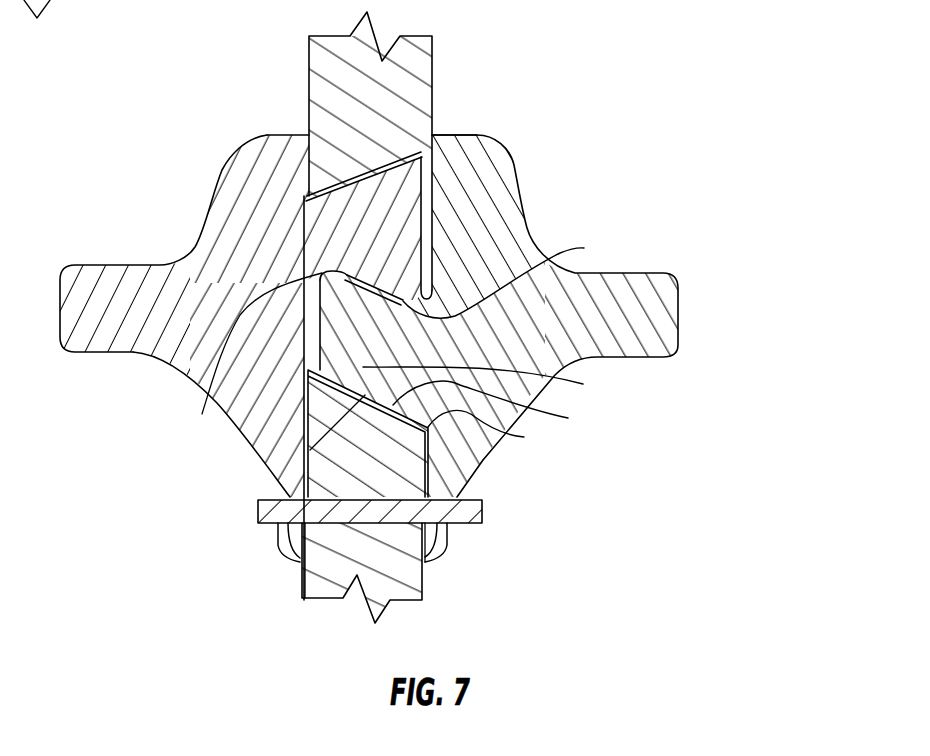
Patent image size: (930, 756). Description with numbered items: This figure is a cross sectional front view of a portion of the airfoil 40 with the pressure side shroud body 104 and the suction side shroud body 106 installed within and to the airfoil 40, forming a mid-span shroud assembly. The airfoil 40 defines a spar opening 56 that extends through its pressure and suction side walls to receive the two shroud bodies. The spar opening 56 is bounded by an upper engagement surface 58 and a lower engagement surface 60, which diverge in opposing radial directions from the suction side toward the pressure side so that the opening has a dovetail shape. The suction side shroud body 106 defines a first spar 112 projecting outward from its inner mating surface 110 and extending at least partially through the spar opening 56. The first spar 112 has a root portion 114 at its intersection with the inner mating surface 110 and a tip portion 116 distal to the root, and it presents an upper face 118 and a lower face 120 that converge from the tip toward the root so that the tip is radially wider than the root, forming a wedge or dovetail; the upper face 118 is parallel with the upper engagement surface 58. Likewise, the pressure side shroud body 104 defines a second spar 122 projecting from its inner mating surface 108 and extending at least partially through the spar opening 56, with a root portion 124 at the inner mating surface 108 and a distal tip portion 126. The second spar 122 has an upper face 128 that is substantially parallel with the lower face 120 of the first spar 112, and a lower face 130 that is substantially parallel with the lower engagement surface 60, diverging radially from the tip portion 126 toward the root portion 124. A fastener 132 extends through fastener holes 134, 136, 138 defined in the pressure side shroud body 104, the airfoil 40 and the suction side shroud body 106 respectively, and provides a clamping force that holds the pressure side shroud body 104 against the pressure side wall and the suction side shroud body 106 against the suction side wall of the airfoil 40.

The airfoil 40 is at (416, 77).
The spar opening 56 is at (306, 342).
The upper engagement surface 58 is at (330, 213).
The lower engagement surface 60 is at (283, 492).
The pressure side shroud body 104 is at (633, 313).
The suction side shroud body 106 is at (137, 322).
The inner mating surface 108 is at (432, 277).
The inner mating surface 110 is at (200, 402).
The first spar 112 is at (390, 242).
The root portion 114 is at (303, 198).
The tip portion 116 is at (428, 220).
The upper face 118 is at (320, 214).
The lower face 120 is at (320, 252).
The second spar 122 is at (389, 352).
The root portion 124 is at (494, 432).
The tip portion 126 is at (491, 384).
The upper face 128 is at (511, 274).
The lower face 130 is at (499, 408).
The fastener 132 is at (478, 500).
The fastener hole 134 is at (452, 528).
The fastener hole 136 is at (352, 523).
The fastener hole 138 is at (288, 553).